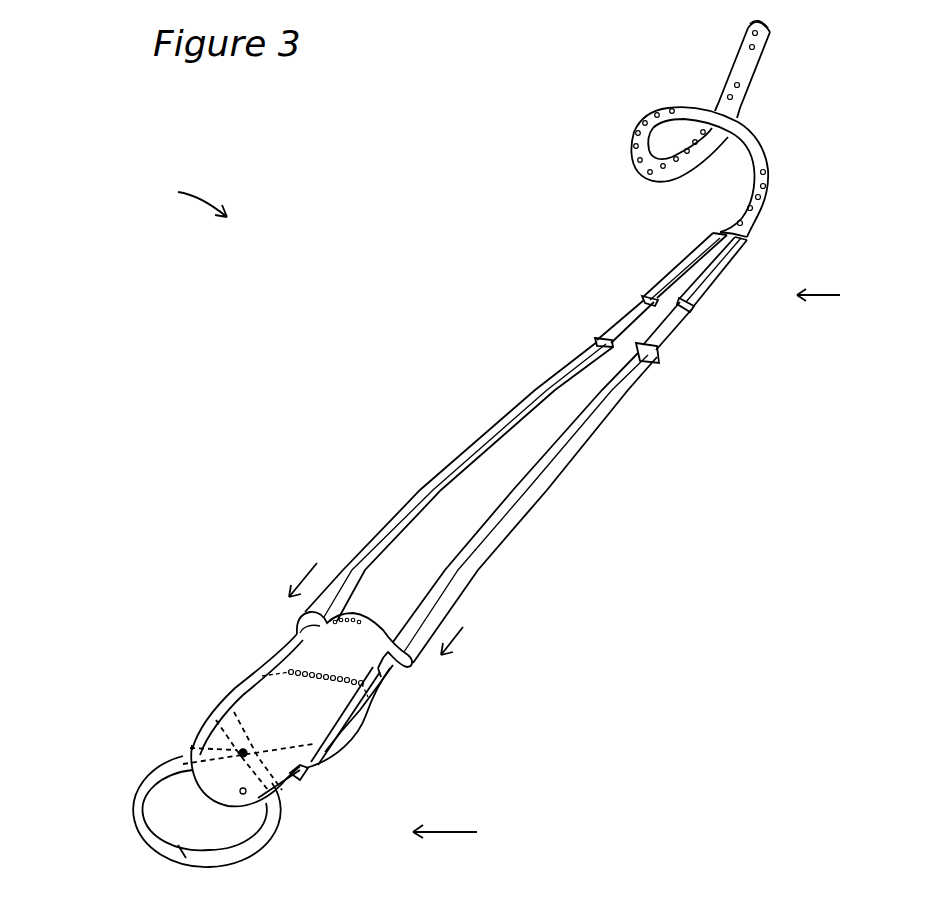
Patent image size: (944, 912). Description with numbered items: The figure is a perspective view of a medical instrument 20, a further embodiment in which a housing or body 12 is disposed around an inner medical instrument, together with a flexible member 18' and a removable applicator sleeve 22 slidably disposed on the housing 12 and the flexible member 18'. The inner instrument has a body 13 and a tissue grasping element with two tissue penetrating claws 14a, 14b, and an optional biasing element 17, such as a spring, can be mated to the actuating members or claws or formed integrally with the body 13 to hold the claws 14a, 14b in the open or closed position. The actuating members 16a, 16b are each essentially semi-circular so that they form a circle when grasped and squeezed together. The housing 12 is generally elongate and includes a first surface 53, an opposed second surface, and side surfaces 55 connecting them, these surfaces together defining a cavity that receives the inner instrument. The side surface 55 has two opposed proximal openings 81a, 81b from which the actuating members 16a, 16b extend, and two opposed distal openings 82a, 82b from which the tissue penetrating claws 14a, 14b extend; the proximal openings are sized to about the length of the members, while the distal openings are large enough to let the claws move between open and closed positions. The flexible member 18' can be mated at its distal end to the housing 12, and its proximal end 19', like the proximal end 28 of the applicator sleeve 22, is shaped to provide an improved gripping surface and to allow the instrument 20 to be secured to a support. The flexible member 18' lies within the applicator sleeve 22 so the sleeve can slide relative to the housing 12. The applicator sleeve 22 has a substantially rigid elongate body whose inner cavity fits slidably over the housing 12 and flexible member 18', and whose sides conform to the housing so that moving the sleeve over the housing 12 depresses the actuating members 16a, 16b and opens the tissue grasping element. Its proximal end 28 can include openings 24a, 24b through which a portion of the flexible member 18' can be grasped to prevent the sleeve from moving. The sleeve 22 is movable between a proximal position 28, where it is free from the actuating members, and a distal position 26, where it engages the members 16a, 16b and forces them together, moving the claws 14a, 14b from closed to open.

The housing 12 is at (207, 730).
The body 13 is at (260, 757).
The tissue penetrating claw 14a is at (138, 793).
The tissue penetrating claw 14b is at (283, 823).
The actuating member 16a is at (240, 678).
The actuating member 16b is at (357, 727).
The biasing element 17 is at (350, 687).
The flexible member 18' is at (647, 184).
The proximal end of flexible member 19' is at (795, 33).
The medical instrument 20 is at (182, 201).
The applicator sleeve 22 is at (527, 523).
The opening 24a is at (597, 340).
The opening 24b is at (652, 362).
The second distal position 26 is at (458, 834).
The proximal end of applicator sleeve 28 is at (833, 298).
The first surface 53 is at (307, 653).
The side surface 55 is at (381, 677).
The proximal opening 81a is at (227, 697).
The proximal opening 81b is at (357, 708).
The distal opening 82a is at (190, 753).
The distal opening 82b is at (293, 780).